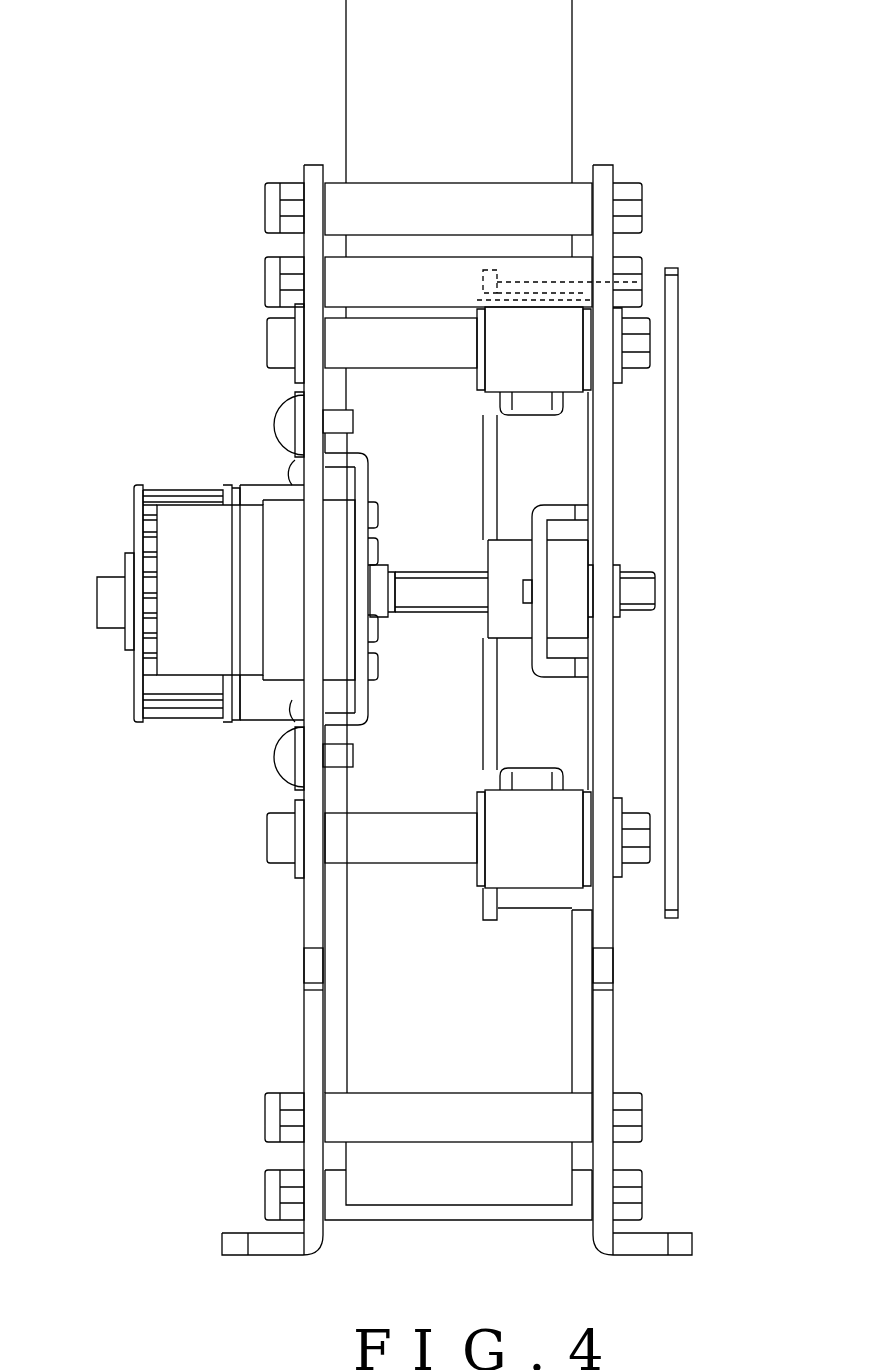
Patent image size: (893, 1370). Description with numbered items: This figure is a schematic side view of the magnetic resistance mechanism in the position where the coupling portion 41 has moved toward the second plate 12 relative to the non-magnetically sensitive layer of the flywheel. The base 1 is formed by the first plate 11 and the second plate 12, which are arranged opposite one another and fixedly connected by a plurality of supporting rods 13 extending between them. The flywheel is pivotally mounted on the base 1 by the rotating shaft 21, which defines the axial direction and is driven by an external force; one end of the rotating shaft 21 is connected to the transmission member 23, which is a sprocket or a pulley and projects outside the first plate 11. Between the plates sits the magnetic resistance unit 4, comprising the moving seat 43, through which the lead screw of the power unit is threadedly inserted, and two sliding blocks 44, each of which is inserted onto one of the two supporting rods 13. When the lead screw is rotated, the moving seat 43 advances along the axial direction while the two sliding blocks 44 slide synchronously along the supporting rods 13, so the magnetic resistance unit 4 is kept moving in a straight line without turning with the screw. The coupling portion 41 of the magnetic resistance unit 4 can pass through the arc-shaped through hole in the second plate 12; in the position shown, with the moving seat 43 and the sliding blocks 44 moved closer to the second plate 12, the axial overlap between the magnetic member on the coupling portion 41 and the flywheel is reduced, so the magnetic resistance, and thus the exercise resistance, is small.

The base 1 is at (232, 240).
The first plate 11 is at (315, 897).
The second plate 12 is at (600, 1020).
The supporting rods 13 is at (405, 848).
The rotating shaft 21 is at (440, 592).
The transmission member 23 is at (135, 705).
The magnetic resistance unit 4 is at (538, 567).
The coupling portion 41 is at (672, 697).
The moving seat 43 is at (560, 598).
The sliding blocks 44 is at (540, 828).